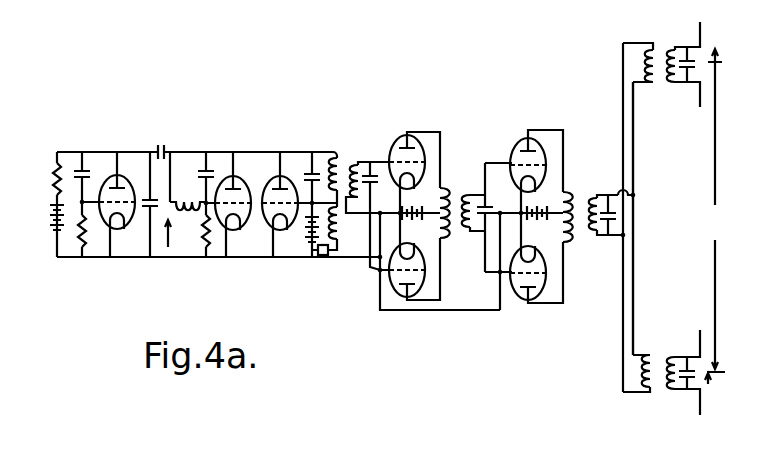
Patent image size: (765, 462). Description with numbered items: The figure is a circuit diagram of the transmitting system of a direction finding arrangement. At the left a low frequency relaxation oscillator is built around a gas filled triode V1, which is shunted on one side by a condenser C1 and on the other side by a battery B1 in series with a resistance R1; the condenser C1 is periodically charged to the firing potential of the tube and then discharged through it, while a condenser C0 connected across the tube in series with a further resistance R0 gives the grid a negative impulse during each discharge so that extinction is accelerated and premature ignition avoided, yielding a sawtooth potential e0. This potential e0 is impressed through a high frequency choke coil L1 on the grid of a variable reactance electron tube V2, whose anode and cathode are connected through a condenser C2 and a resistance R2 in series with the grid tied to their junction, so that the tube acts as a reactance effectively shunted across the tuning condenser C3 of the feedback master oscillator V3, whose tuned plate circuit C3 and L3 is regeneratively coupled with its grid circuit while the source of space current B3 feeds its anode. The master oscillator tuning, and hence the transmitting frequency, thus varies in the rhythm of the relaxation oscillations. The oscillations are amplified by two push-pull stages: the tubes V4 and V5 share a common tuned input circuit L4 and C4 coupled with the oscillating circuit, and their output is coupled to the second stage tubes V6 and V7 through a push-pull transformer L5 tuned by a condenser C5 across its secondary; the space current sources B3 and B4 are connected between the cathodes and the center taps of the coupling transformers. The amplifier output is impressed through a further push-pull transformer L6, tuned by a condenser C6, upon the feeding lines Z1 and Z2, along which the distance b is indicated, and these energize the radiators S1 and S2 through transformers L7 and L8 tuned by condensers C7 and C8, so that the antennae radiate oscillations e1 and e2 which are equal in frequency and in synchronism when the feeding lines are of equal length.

The resistance R1 is at (55, 188).
The condenser C0 is at (79, 170).
The gas filled triode V1 is at (118, 185).
The battery B1 is at (53, 230).
The resistance R0 is at (80, 243).
The condenser C1 is at (149, 208).
The potential e0 is at (177, 234).
The condenser C2 is at (205, 170).
The high frequency choke coil L1 is at (192, 200).
The resistance R2 is at (206, 245).
The variable reactance electron tube V2 is at (238, 186).
The feedback master oscillator V3 is at (283, 186).
The tuning condenser C3 is at (313, 178).
The tuned plate circuit coil L3 is at (339, 163).
The tuned input circuit coil L4 is at (355, 198).
The condenser C4 is at (372, 179).
The amplifying tube V4 is at (402, 141).
The amplifying tube V5 is at (404, 293).
The source of space current B3 is at (416, 215).
The push-pull transformer L5 is at (466, 197).
The condenser C5 is at (484, 216).
The amplifying tube V6 is at (520, 146).
The amplifying tube V7 is at (524, 295).
The space current source B4 is at (539, 224).
The push-pull transformer L6 is at (588, 199).
The condenser C6 is at (608, 222).
The transformer L7 is at (650, 52).
The condenser C7 is at (686, 60).
The radiator S1 is at (673, 85).
The oscillations e1 is at (720, 60).
The feeding line Z1 is at (633, 137).
The output line b is at (716, 217).
The feeding line Z2 is at (633, 268).
The radiator S2 is at (671, 357).
The transformer L8 is at (653, 391).
The condenser C8 is at (686, 380).
The oscillations e2 is at (716, 386).